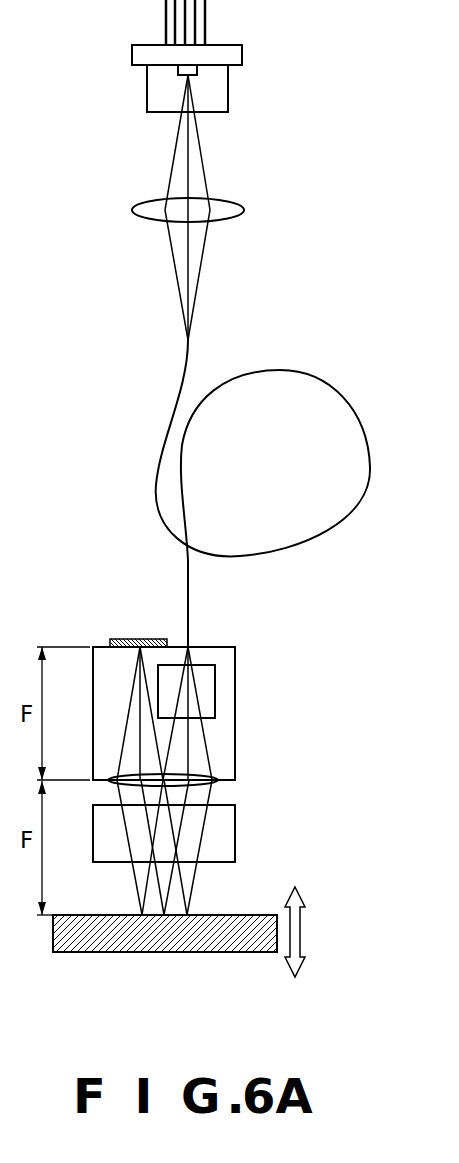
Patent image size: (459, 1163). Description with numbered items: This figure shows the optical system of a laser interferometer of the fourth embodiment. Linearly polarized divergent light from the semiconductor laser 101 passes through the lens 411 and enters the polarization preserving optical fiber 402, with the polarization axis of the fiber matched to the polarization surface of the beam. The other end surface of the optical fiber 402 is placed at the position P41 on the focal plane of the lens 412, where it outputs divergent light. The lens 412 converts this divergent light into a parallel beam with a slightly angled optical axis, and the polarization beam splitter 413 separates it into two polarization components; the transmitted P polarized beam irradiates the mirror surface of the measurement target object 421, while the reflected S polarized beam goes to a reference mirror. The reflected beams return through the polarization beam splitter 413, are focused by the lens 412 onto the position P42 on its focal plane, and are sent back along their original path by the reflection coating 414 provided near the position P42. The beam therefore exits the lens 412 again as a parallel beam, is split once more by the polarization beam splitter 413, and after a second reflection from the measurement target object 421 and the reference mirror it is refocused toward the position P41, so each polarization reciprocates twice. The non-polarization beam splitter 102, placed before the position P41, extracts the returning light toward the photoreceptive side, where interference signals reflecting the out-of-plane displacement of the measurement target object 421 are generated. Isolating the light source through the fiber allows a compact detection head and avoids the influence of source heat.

The semiconductor laser 101 is at (243, 52).
The lens 411 is at (247, 185).
The polarization preserving optical fiber 402 is at (280, 370).
The reflection coating 414 is at (133, 638).
The position on the focal plane of the lens P41 is at (190, 645).
The position on the focal plane of the lens P42 is at (140, 650).
The non-polarization beam splitter 102 is at (217, 690).
The lens 412 is at (215, 775).
The polarization beam splitter 413 is at (237, 832).
The measurement target object 421 is at (233, 953).